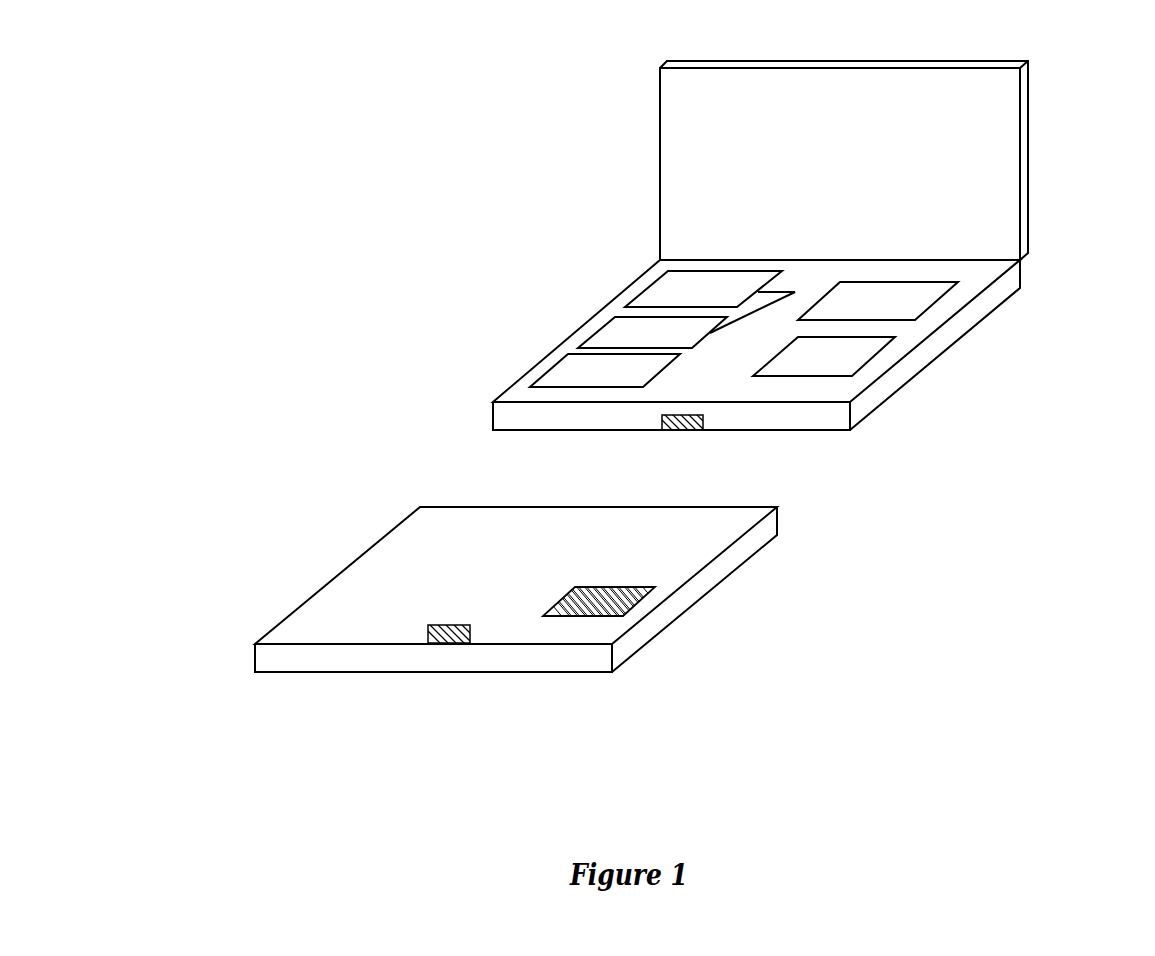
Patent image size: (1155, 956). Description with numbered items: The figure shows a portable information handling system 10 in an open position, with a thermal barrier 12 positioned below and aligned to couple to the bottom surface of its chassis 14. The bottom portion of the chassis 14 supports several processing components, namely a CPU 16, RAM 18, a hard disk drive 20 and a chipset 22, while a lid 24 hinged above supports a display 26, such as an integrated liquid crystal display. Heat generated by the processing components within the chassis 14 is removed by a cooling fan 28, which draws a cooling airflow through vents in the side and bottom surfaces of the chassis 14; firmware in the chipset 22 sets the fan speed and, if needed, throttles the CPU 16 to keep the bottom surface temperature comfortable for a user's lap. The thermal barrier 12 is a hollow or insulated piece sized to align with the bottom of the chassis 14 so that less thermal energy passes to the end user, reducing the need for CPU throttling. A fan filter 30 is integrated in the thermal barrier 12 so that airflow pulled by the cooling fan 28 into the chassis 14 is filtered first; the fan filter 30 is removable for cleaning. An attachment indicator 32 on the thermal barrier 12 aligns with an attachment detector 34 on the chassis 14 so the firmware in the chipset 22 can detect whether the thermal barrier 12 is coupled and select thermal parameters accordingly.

The portable information handling system 10 is at (600, 287).
The thermal barrier 12 is at (742, 547).
The chassis 14 is at (984, 324).
The CPU 16 is at (735, 301).
The RAM 18 is at (683, 343).
The hard disk drive 20 is at (635, 382).
The chipset 22 is at (922, 312).
The lid 24 is at (1030, 108).
The display 26 is at (882, 176).
The cooling fan 28 is at (852, 369).
The fan filter 30 is at (632, 612).
The attachment indicator 32 is at (493, 707).
The attachment detector 34 is at (658, 448).